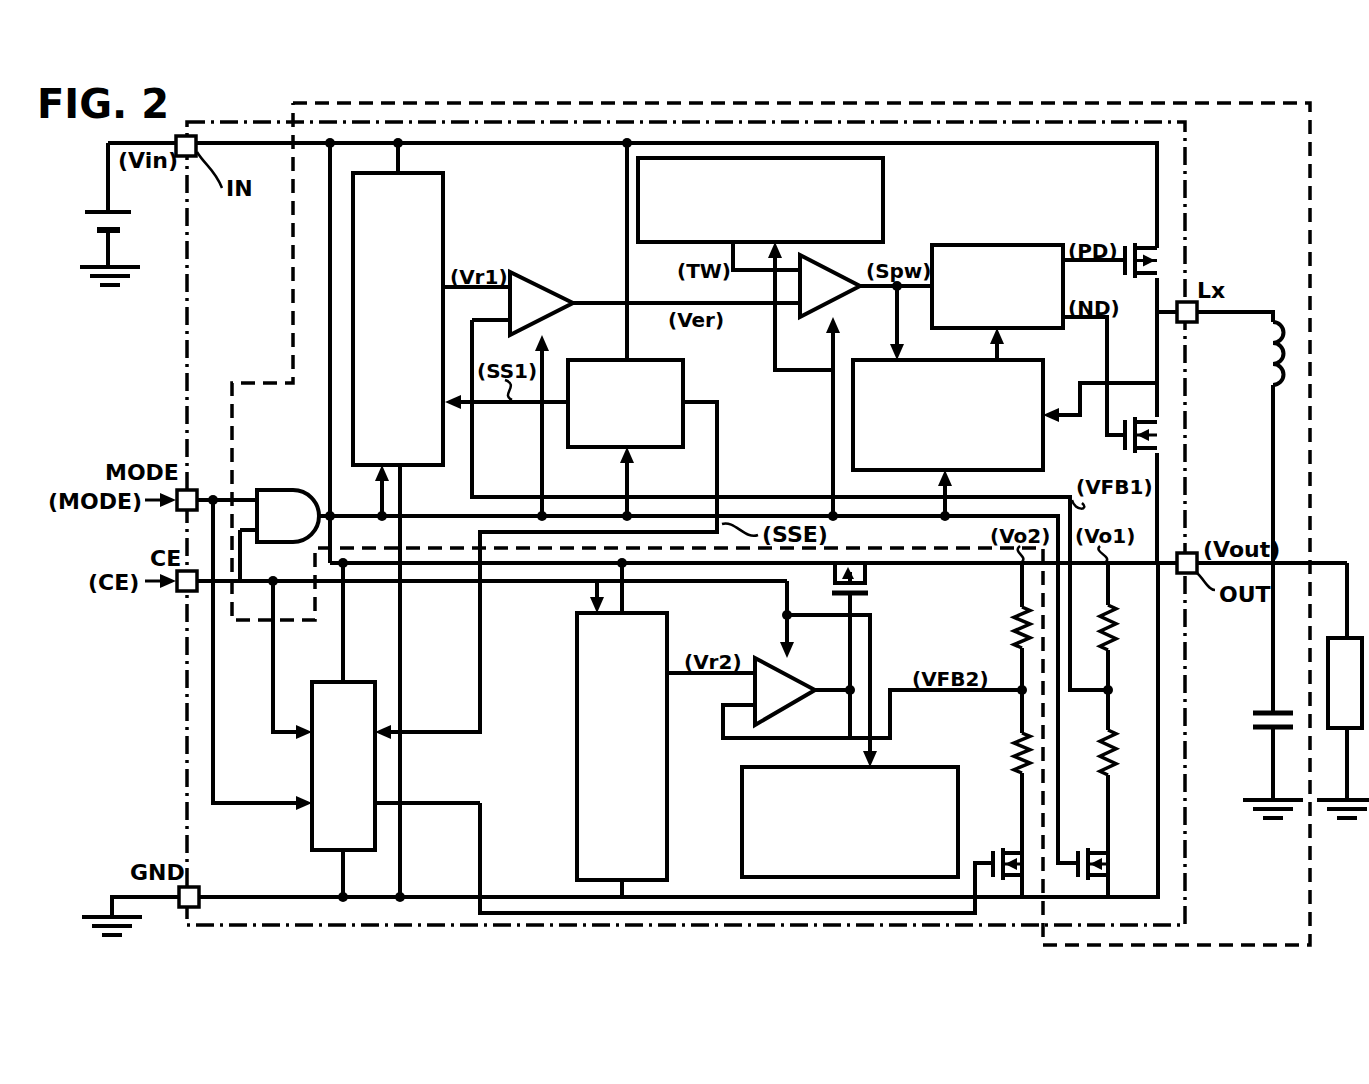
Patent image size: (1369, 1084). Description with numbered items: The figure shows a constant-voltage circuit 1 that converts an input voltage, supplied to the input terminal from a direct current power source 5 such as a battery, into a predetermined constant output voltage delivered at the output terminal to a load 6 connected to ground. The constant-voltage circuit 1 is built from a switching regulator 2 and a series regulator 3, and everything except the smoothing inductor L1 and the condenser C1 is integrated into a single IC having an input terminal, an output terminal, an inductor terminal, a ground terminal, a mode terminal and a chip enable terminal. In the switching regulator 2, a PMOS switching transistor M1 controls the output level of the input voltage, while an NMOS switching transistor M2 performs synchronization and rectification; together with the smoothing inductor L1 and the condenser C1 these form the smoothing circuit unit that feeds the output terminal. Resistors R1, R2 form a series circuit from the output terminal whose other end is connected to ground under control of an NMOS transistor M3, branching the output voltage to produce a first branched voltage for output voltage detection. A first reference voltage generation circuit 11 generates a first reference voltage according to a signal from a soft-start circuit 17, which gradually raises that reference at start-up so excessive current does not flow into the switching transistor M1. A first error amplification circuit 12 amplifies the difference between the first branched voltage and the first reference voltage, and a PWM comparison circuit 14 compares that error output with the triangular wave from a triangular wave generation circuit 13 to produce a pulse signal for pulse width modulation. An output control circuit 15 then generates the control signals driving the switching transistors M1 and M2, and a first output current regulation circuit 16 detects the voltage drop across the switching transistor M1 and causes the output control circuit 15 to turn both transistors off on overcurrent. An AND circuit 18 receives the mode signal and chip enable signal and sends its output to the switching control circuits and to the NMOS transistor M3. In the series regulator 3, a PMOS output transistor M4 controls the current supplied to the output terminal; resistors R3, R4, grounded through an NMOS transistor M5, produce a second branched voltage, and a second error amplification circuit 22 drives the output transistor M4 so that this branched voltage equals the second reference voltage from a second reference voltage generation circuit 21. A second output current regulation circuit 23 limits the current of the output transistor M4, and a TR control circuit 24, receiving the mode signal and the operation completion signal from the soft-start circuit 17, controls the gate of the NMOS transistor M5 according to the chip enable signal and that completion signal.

The constant-voltage circuit 1 is at (1313, 108).
The switching regulator 2 is at (1284, 205).
The series regulator 3 is at (200, 688).
The direct current power source 5 is at (80, 228).
The load 6 is at (1347, 638).
The first reference voltage generation circuit 11 is at (444, 200).
The first error amplification circuit 12 is at (535, 275).
The triangular wave generation circuit 13 is at (884, 200).
The PWM comparison circuit 14 is at (846, 302).
The output control circuit 15 is at (1036, 245).
The first output current regulation circuit 16 is at (1044, 446).
The soft-start circuit 17 is at (600, 358).
The AND circuit 18 is at (265, 490).
The second reference voltage generation circuit 21 is at (577, 748).
The second error amplification circuit 22 is at (796, 672).
The second output current regulation circuit 23 is at (742, 830).
The TR control circuit 24 is at (312, 828).
The switching transistor M1 is at (1139, 248).
The switching transistor M2 is at (1137, 425).
The NMOS transistor M3 is at (1090, 859).
The output transistor M4 is at (873, 650).
The NMOS transistor M5 is at (1003, 859).
The resistor R1 is at (1128, 626).
The resistor R2 is at (1128, 770).
The resistor R3 is at (1005, 626).
The resistor R4 is at (1005, 767).
The condenser C1 is at (1271, 690).
The smoothing inductor L1 is at (1240, 437).